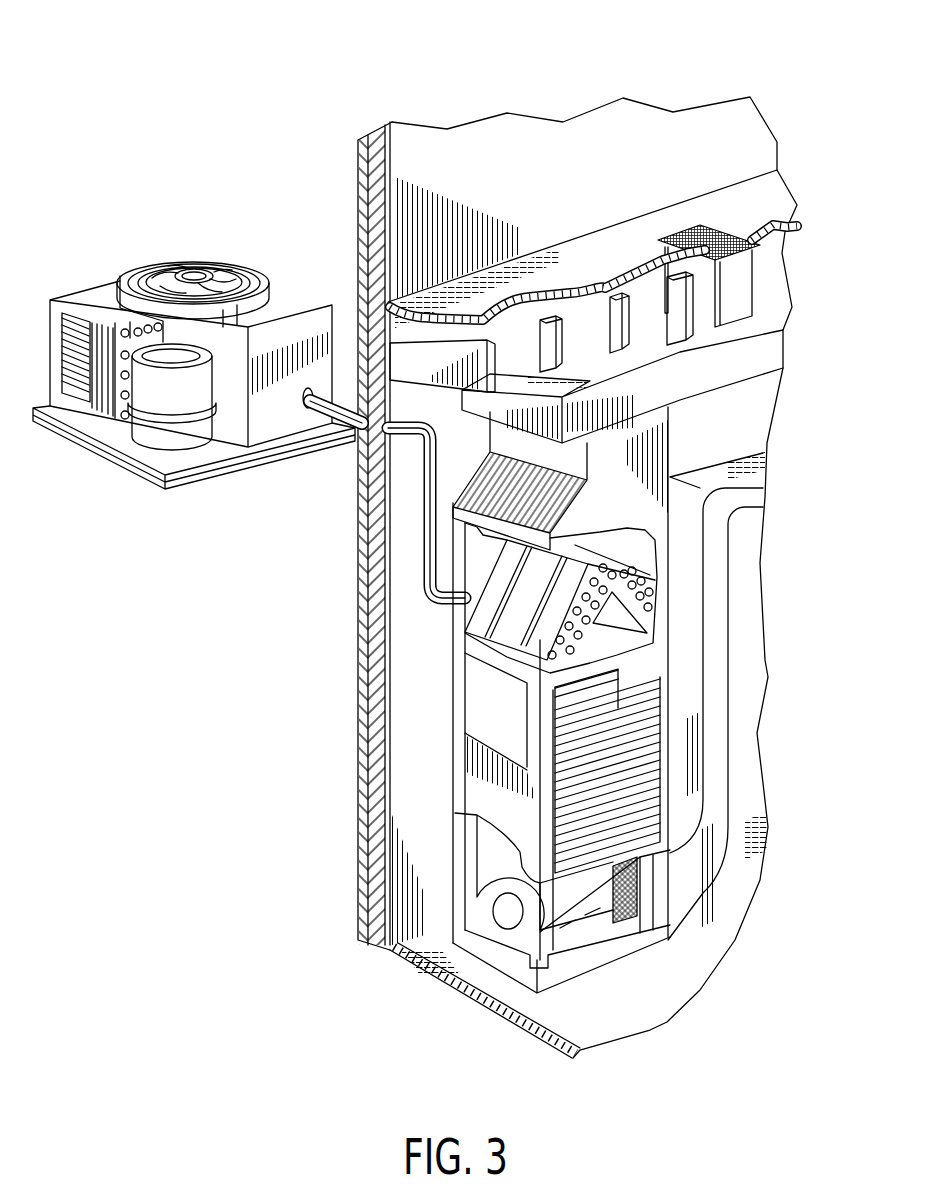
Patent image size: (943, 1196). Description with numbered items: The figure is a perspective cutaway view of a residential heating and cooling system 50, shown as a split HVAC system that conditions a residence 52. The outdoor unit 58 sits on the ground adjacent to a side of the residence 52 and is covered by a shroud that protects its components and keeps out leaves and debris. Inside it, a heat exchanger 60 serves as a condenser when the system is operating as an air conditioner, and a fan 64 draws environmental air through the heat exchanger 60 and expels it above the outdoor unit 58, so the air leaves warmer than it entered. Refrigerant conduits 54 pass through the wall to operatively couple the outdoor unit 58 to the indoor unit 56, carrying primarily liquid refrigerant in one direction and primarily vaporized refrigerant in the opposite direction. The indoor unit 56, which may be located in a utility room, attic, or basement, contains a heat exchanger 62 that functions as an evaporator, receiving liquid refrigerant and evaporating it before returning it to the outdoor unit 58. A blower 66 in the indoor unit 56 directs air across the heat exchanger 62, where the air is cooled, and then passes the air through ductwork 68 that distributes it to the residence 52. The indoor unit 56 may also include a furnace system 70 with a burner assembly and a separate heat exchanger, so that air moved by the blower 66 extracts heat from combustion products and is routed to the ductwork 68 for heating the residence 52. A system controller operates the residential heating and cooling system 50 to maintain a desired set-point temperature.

The residential heating and cooling system 50 is at (190, 97).
The residence 52 is at (490, 143).
The refrigerant conduits 54 is at (423, 515).
The indoor unit 56 is at (435, 752).
The outdoor unit 58 is at (152, 252).
The heat exchanger 60 is at (123, 335).
The heat exchanger 62 is at (513, 629).
The fan 64 is at (205, 268).
The blower 66 is at (503, 935).
The ductwork 68 is at (737, 332).
The furnace system 70 is at (463, 707).